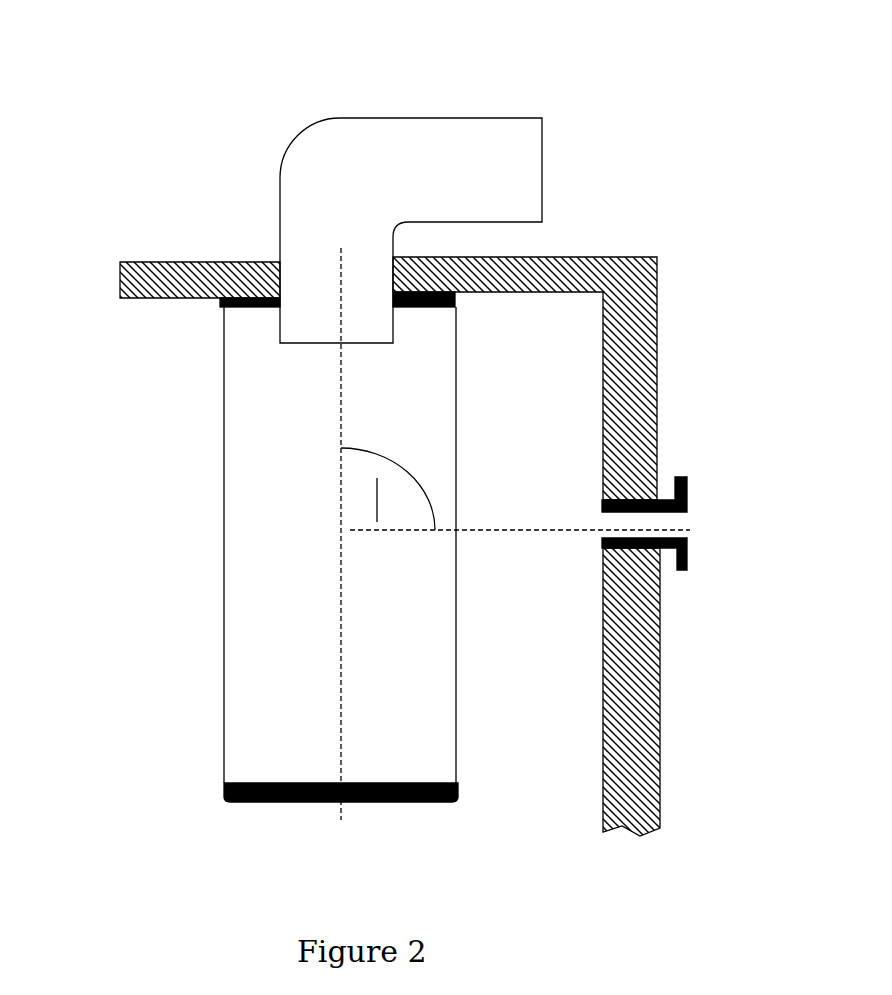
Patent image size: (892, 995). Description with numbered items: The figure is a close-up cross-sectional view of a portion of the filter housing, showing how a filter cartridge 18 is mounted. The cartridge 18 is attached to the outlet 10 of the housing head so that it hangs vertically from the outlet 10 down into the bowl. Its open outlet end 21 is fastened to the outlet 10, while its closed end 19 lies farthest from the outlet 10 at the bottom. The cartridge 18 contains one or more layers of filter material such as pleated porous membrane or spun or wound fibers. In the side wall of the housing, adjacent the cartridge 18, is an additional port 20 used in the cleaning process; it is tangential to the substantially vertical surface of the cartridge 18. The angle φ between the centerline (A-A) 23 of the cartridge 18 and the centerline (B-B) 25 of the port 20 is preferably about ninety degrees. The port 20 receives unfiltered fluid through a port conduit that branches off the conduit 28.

The outlet 10 is at (404, 166).
The filter cartridge 18 is at (223, 582).
The closed end 19 is at (412, 802).
The port 20 is at (668, 550).
The open outlet end 21 is at (222, 300).
The centerline (A-A) 23 is at (342, 400).
The centerline (B-B) 25 is at (515, 532).
The conduit 28 is at (505, 155).